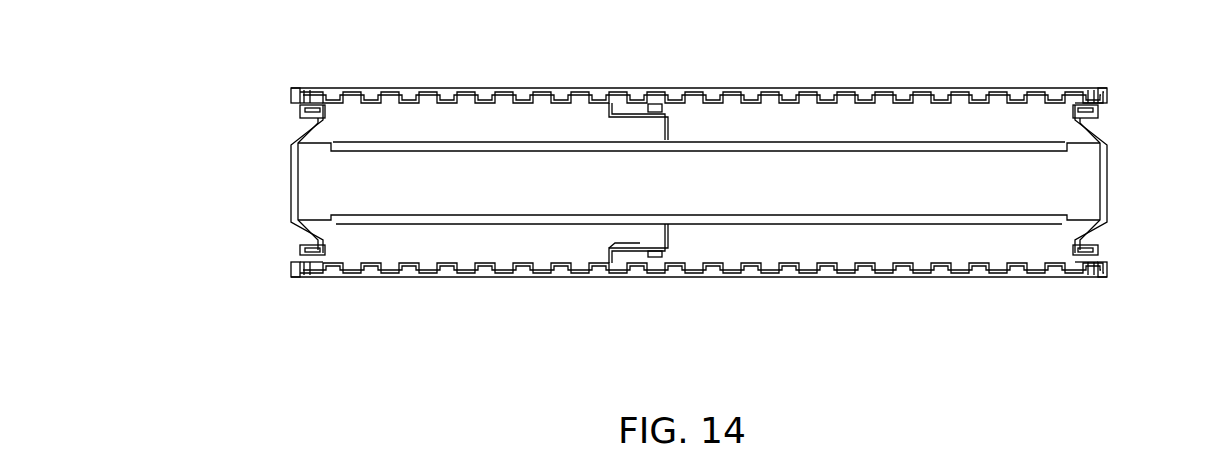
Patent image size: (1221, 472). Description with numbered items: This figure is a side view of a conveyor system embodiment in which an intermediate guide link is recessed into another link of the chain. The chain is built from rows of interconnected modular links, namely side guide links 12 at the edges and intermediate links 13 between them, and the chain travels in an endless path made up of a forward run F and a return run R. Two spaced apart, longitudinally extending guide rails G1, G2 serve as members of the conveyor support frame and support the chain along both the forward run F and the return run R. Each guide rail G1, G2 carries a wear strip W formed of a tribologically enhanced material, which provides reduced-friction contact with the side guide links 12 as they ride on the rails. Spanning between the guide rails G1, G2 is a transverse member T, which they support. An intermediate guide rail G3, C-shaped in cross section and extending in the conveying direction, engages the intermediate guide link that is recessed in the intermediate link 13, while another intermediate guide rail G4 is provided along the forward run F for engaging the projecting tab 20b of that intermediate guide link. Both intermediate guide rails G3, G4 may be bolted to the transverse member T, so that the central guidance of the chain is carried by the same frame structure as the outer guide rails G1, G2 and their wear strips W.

The wear strip W is at (303, 102).
The forward run F is at (834, 77).
The return run R is at (836, 325).
The transverse member T is at (814, 200).
The guide rail G1 is at (292, 177).
The guide rail G2 is at (1107, 176).
The intermediate guide rail G3 is at (672, 262).
The intermediate guide rail G4 is at (672, 122).
The side guide link 12 is at (298, 277).
The intermediate link 13 is at (738, 273).
The projecting tab 20b is at (626, 262).